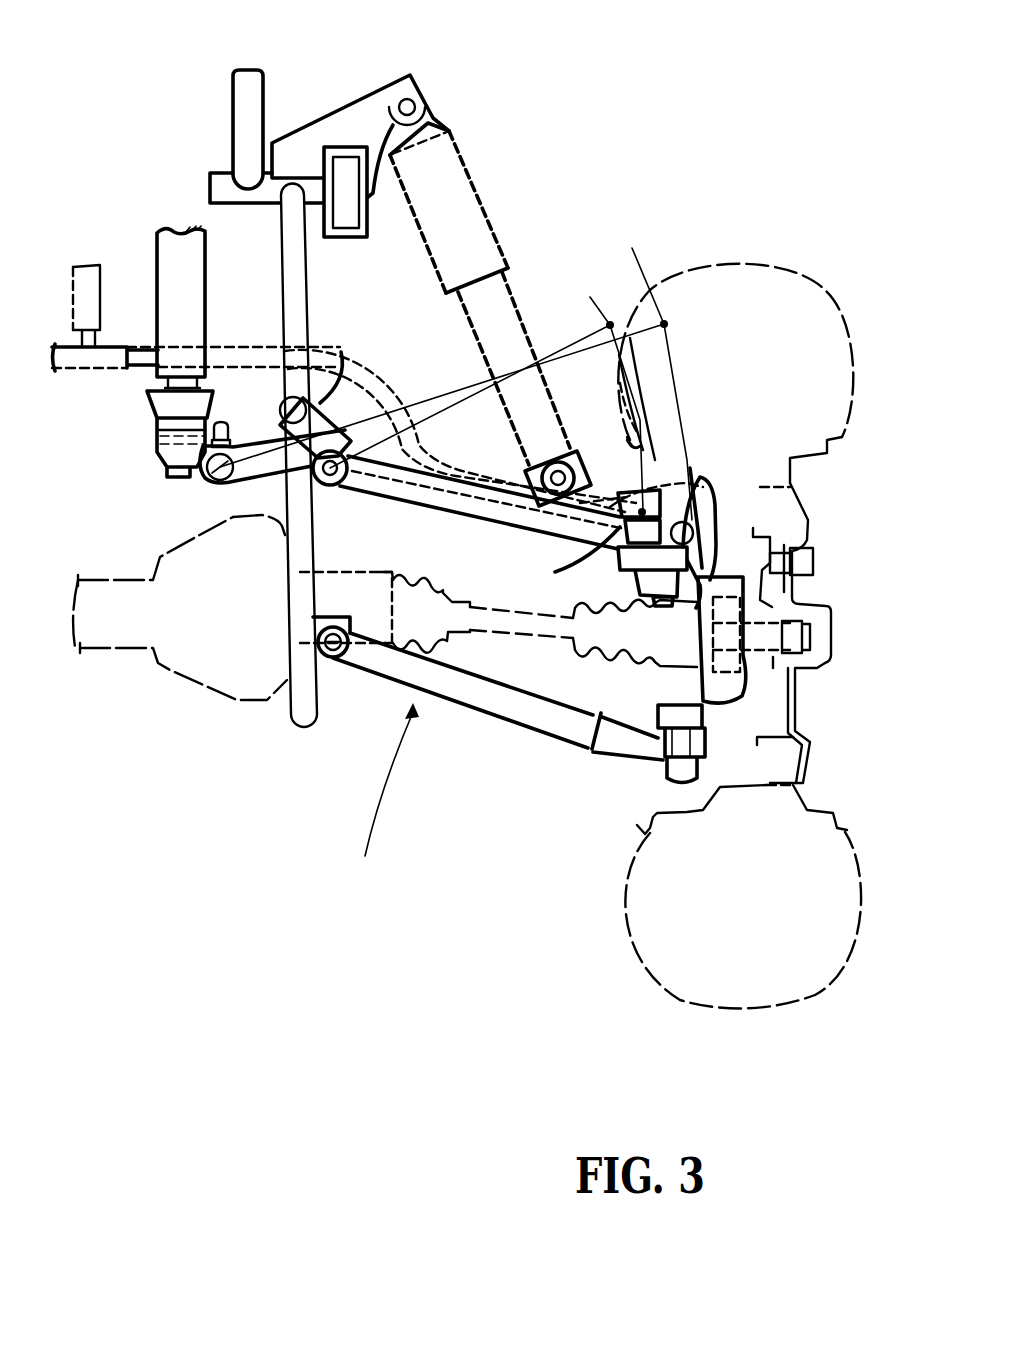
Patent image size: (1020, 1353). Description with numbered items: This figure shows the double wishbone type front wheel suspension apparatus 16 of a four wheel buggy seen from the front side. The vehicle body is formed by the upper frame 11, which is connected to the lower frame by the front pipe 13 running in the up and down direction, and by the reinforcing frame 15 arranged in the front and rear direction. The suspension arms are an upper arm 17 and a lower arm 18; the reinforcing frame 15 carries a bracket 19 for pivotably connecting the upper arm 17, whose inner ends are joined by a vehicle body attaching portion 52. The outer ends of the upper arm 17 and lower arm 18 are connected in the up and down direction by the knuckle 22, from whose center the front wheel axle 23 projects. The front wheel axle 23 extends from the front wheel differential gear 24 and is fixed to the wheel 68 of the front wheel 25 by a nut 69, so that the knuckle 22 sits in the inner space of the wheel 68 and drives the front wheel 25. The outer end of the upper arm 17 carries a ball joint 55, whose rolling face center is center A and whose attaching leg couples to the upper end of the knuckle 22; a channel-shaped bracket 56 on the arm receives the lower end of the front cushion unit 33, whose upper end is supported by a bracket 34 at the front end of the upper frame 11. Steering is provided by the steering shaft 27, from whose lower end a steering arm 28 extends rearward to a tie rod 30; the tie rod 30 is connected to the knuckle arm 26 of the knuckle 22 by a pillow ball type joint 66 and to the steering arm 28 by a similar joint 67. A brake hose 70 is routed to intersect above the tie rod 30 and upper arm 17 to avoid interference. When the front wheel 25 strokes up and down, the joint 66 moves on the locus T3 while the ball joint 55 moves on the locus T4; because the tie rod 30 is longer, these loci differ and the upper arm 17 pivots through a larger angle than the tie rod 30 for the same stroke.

The upper frame 11 is at (358, 238).
The front pipe 13 is at (285, 300).
The reinforcing frame 15 is at (280, 400).
The front wheel suspension apparatus 16 is at (383, 900).
The upper arm 17 is at (473, 519).
The lower arm 18 is at (487, 705).
The bracket 19 is at (341, 352).
The knuckle 22 is at (670, 667).
The front wheel axle 23 is at (815, 632).
The front wheel differential gear 24 is at (177, 673).
The front wheel 25 is at (783, 273).
The knuckle arm 26 is at (670, 608).
The steering shaft 27 is at (155, 232).
The steering arm 28 is at (167, 472).
The tie rod 30 is at (260, 518).
The front cushion unit 33 is at (475, 230).
The bracket 34 is at (363, 120).
The vehicle body attaching portion 52 is at (333, 492).
The ball joint 55 is at (657, 457).
The bracket 56 is at (590, 463).
The pillow ball type joint 66 is at (700, 478).
The joint 67 is at (213, 483).
The wheel 68 is at (825, 588).
The nut 69 is at (832, 673).
The brake hose 70 is at (393, 393).
The center A is at (583, 562).
The locus T3 is at (456, 359).
The locus T4 is at (486, 386).